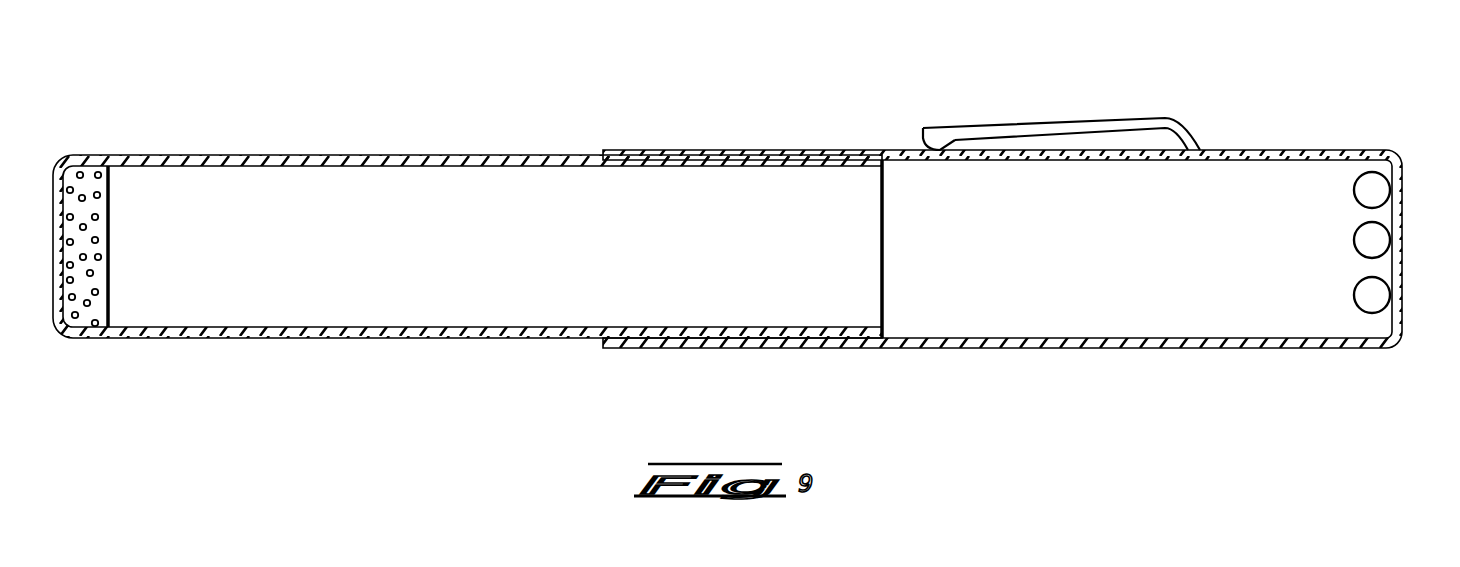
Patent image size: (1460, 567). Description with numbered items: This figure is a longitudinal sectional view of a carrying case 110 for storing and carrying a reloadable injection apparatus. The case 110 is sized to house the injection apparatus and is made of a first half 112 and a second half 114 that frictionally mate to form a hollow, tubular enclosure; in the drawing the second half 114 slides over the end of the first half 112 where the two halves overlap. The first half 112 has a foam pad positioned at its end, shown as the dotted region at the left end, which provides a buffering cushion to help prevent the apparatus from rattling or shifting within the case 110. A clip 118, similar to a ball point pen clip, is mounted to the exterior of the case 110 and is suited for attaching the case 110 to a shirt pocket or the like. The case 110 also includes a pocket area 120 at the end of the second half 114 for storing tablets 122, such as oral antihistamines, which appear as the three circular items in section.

The carrying case 110 is at (751, 289).
The first half 112 is at (400, 342).
The second half 114 is at (1007, 348).
The clip 118 is at (1092, 128).
The pocket area 120 is at (1322, 288).
The tablets 122 is at (1372, 292).